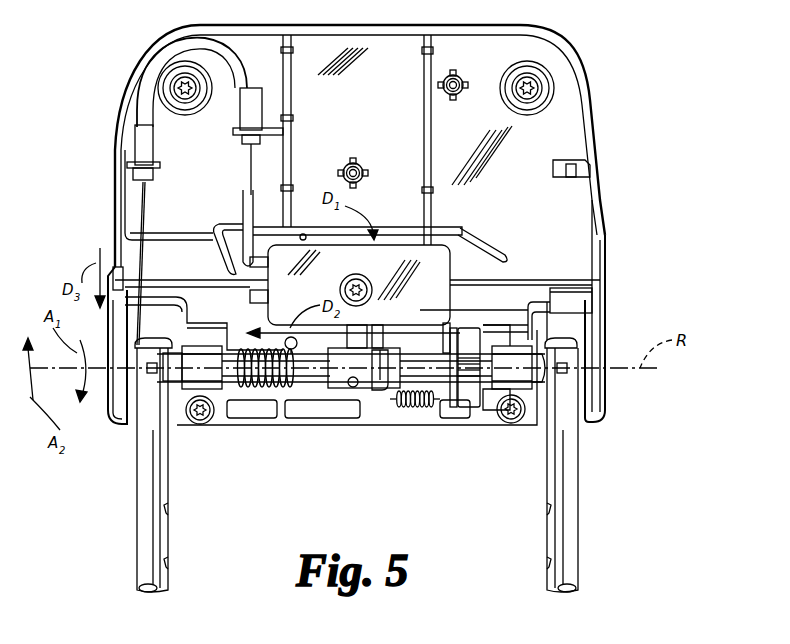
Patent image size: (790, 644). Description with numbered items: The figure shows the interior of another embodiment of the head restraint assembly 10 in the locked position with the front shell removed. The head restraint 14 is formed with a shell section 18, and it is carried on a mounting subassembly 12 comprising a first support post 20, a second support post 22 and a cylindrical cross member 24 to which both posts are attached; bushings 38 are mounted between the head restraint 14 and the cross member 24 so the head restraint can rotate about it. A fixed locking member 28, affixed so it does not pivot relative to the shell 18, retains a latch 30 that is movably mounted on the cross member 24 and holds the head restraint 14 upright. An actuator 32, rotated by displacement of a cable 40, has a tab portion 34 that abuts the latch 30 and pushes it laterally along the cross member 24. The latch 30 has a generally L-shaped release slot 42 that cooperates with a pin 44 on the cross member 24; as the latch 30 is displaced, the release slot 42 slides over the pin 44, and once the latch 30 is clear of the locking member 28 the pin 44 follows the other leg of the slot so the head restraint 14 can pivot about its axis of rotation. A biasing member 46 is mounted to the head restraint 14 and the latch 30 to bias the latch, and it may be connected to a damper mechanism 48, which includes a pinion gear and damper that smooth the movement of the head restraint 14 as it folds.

The head restraint assembly 10 is at (645, 182).
The mounting subassembly 12 is at (420, 492).
The head restraint 14 is at (88, 213).
The shell section 18 is at (587, 98).
The first support post 20 is at (136, 468).
The second support post 22 is at (580, 457).
The cross member 24 is at (232, 390).
The fixed locking member 28 is at (600, 276).
The latch 30 is at (392, 335).
The actuator 32 is at (492, 222).
The tab portion 34 is at (470, 407).
The bushings 38 is at (192, 424).
The cable 40 is at (140, 203).
The release slot 42 is at (356, 387).
The pin 44 is at (350, 388).
The biasing member 46 is at (408, 405).
The damper mechanism 48 is at (478, 412).